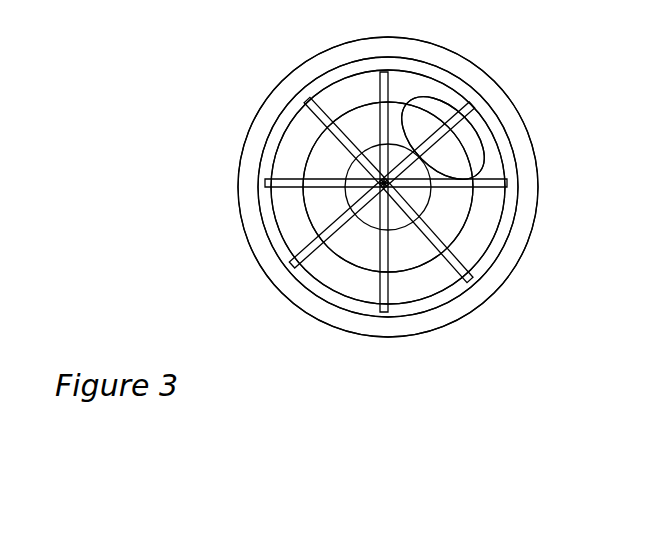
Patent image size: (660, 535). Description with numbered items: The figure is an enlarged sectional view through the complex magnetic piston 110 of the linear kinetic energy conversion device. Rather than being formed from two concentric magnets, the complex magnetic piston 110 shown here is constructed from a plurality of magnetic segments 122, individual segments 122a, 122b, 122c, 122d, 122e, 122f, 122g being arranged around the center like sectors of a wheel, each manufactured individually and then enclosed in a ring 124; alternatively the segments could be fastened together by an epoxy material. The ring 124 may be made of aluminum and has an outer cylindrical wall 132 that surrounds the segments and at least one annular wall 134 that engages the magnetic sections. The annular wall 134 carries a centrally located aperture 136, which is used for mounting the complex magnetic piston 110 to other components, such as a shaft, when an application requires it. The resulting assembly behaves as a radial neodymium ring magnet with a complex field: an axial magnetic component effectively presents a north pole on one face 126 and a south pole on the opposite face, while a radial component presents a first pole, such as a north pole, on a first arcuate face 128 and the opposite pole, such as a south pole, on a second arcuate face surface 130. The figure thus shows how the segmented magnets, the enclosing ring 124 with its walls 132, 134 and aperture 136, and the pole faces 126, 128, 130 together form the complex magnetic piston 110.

The complex magnetic piston 110 is at (300, 350).
The magnetic segment 122 is at (327, 278).
The magnetic segment 122a is at (415, 292).
The magnetic segment 122b is at (483, 238).
The magnetic segment 122c is at (482, 138).
The magnetic segment 122d is at (420, 87).
The magnetic segment 122e is at (335, 85).
The magnetic segment 122f is at (287, 147).
The magnetic segment 122g is at (288, 227).
The ring 124 is at (472, 308).
The face 126 is at (505, 177).
The first arcuate face 128 is at (505, 206).
The second arcuate face surface 130 is at (450, 98).
The outer cylindrical wall 132 is at (298, 77).
The annular wall 134 is at (395, 262).
The aperture 136 is at (413, 205).